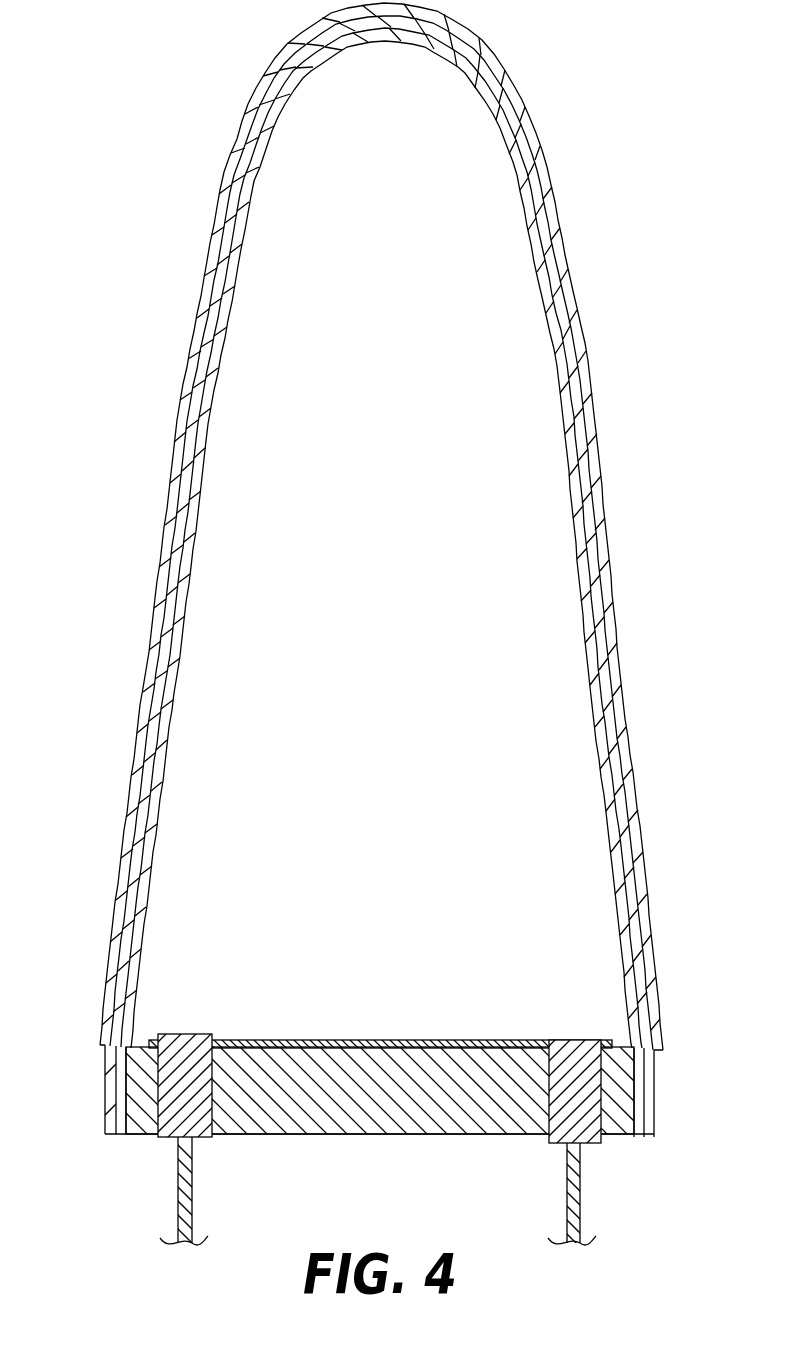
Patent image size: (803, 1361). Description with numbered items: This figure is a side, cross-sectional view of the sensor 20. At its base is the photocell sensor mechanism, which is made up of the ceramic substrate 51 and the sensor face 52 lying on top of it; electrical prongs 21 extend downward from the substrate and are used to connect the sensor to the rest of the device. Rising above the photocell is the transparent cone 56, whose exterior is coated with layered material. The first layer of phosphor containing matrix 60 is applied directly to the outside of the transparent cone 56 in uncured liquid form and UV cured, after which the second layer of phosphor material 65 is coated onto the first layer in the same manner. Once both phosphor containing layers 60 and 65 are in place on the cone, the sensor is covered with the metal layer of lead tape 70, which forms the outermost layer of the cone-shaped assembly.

The sensor 20 is at (96, 338).
The lead tape 70 is at (588, 375).
The second layer of phosphor material 65 is at (590, 488).
The first layer of phosphor containing matrix 60 is at (594, 619).
The transparent cone 56 is at (421, 578).
The sensor face 52 is at (375, 1042).
The ceramic substrate 51 is at (386, 1109).
The electrical prongs 21 is at (186, 1190).